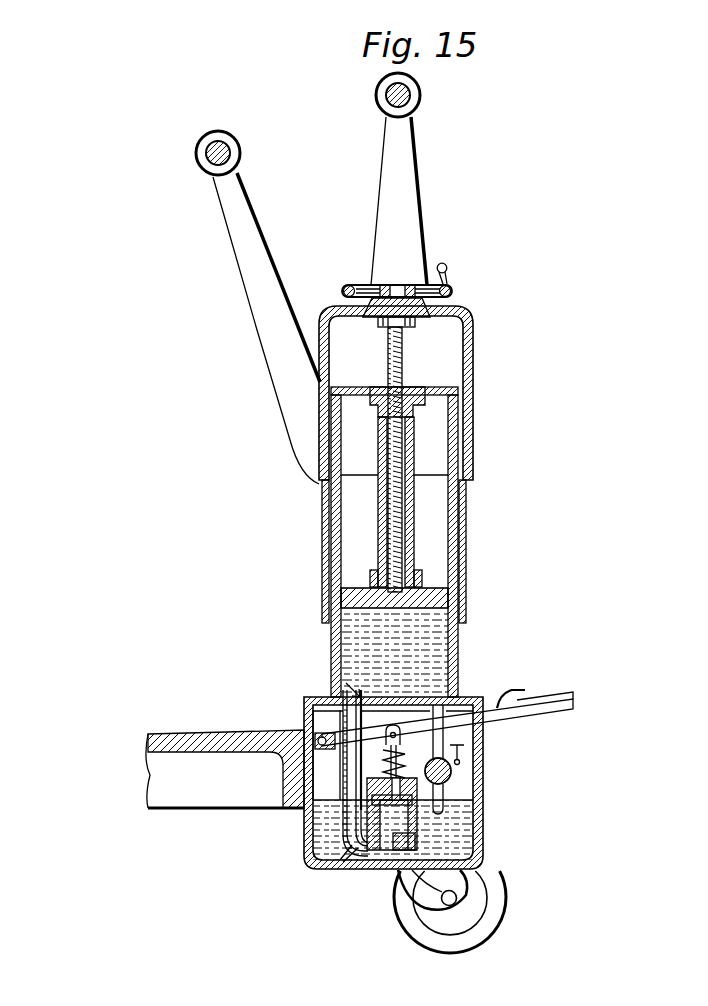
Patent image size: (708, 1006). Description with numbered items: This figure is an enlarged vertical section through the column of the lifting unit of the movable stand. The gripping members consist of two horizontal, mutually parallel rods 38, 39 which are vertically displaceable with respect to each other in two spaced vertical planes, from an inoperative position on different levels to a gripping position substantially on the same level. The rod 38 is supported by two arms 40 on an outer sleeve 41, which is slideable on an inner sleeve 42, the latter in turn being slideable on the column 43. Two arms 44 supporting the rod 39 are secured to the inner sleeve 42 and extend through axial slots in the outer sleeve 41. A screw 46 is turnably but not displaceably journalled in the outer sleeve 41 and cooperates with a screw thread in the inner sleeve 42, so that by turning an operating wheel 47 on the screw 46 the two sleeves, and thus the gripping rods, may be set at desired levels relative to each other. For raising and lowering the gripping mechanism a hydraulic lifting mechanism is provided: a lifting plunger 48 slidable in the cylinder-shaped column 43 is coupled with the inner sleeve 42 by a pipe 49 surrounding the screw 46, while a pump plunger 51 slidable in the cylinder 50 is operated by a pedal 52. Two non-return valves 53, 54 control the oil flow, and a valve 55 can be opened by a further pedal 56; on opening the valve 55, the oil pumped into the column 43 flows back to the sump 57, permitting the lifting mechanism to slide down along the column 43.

The rod 38 is at (421, 95).
The rod 39 is at (214, 160).
The arms 40 is at (407, 178).
The outer sleeve 41 is at (474, 368).
The inner sleeve 42 is at (459, 463).
The column 43 is at (453, 652).
The arms 44 is at (250, 248).
The screw 46 is at (403, 353).
The operating wheel 47 is at (449, 289).
The lifting plunger 48 is at (432, 598).
The pipe 49 is at (412, 440).
The cylinder 50 is at (478, 822).
The pump plunger 51 is at (342, 868).
The pedal 52 is at (577, 700).
The non-return valve 53 is at (382, 866).
The non-return valve 54 is at (350, 688).
The valve 55 is at (452, 770).
The pedal 56 is at (520, 690).
The sump 57 is at (486, 862).